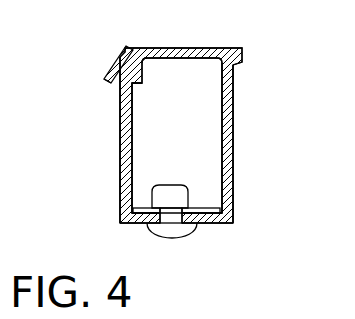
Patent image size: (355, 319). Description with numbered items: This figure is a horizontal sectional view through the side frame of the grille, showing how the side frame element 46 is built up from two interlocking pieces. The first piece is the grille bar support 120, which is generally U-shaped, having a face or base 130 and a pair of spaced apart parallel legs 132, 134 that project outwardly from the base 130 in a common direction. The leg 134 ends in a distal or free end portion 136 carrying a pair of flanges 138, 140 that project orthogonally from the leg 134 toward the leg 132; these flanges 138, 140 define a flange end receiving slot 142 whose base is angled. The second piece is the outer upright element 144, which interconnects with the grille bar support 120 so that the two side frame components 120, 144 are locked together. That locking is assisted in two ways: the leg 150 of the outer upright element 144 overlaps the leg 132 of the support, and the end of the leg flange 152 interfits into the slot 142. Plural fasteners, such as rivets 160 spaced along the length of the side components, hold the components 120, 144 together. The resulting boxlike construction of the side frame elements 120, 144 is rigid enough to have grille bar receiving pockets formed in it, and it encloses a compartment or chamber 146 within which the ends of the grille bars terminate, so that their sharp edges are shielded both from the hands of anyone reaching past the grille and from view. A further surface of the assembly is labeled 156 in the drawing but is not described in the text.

The side frame element 46 is at (235, 88).
The grille bar support 120 is at (236, 167).
The base 130 is at (233, 192).
The leg 132 is at (207, 223).
The leg 134 is at (182, 48).
The free end portion 136 is at (108, 78).
The flange 138 is at (107, 71).
The flange 140 is at (145, 67).
The flange end receiving slot 142 is at (118, 63).
The outer upright element 144 is at (120, 160).
The chamber 146 is at (189, 128).
The leg 150 is at (135, 208).
The leg flange 152 is at (120, 122).
The bottom surface 156 is at (138, 224).
The rivets 160 is at (168, 240).